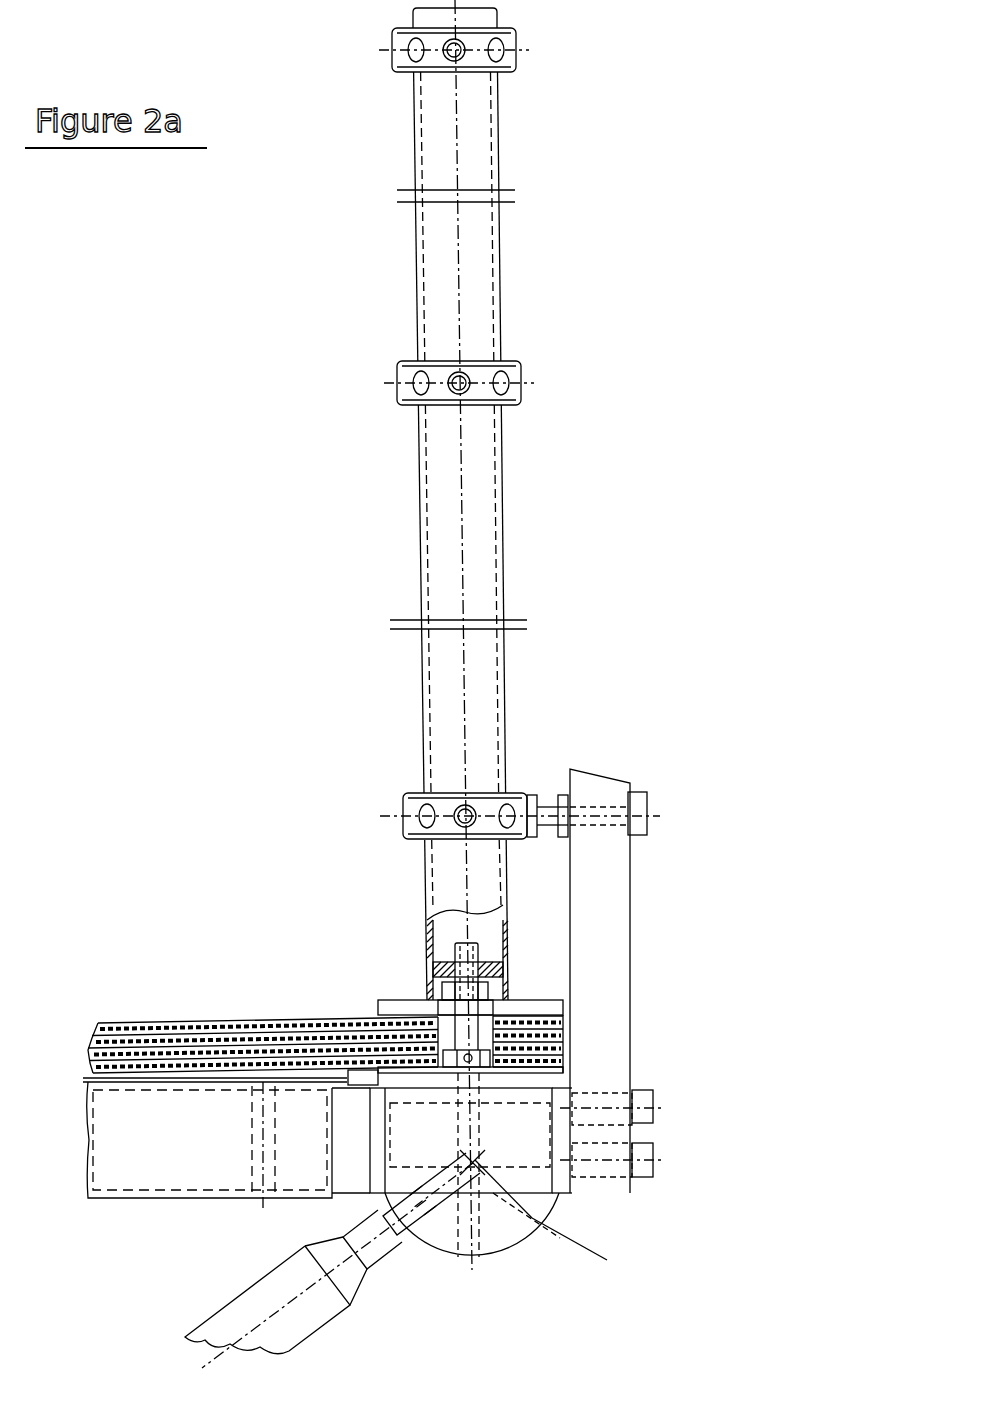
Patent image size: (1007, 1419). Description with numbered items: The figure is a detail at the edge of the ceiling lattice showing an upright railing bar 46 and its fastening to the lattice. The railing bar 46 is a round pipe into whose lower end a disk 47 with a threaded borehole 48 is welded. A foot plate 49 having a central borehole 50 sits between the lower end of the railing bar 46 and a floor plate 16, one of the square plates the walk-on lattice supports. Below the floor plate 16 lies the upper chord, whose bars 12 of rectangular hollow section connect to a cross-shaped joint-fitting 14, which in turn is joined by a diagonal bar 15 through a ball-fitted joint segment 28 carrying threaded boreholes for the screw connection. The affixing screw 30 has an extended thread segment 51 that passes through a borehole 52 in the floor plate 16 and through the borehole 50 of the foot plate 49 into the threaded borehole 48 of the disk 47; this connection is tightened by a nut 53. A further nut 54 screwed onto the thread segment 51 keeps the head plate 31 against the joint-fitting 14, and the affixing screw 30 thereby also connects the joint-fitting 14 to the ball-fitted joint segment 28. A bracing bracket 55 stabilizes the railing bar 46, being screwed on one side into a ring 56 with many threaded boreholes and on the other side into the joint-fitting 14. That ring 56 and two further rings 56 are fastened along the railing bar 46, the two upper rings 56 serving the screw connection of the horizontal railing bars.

The bars of the upper chord 12 is at (137, 1177).
The joint-fitting 14 is at (413, 1198).
The diagonal bar 15 is at (265, 1298).
The floor plate 16 is at (142, 1052).
The ball-fitted joint segment 28 is at (503, 1232).
The affixing screw 30 is at (480, 1132).
The head plate 31 is at (380, 1088).
The railing bar 46 is at (485, 552).
The disk 47 is at (427, 958).
The threaded borehole 48 is at (430, 975).
The foot plate 49 is at (393, 1012).
The central borehole 50 is at (477, 1008).
The extended thread segment 51 is at (500, 953).
The borehole 52 is at (490, 1028).
The nut 53 is at (483, 990).
The further nut 54 is at (560, 1067).
The bracing bracket 55 is at (608, 870).
The ring 56 is at (400, 62).